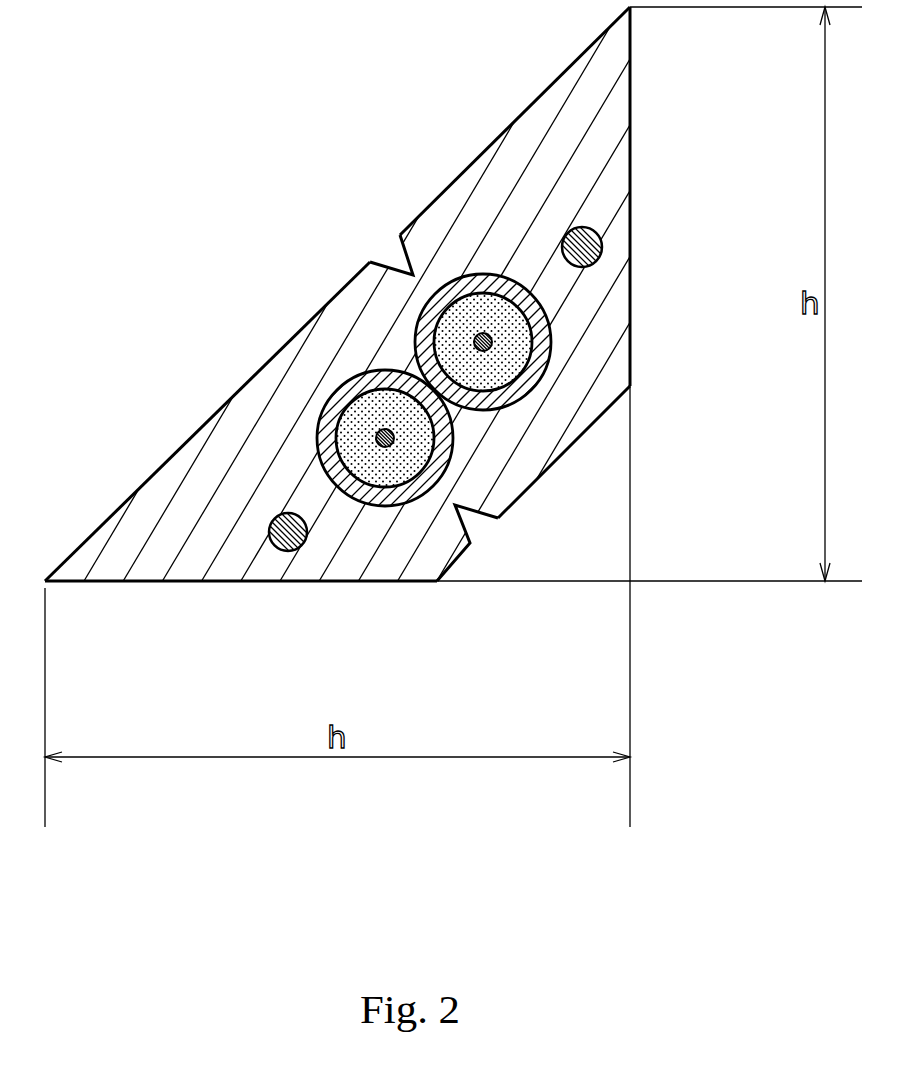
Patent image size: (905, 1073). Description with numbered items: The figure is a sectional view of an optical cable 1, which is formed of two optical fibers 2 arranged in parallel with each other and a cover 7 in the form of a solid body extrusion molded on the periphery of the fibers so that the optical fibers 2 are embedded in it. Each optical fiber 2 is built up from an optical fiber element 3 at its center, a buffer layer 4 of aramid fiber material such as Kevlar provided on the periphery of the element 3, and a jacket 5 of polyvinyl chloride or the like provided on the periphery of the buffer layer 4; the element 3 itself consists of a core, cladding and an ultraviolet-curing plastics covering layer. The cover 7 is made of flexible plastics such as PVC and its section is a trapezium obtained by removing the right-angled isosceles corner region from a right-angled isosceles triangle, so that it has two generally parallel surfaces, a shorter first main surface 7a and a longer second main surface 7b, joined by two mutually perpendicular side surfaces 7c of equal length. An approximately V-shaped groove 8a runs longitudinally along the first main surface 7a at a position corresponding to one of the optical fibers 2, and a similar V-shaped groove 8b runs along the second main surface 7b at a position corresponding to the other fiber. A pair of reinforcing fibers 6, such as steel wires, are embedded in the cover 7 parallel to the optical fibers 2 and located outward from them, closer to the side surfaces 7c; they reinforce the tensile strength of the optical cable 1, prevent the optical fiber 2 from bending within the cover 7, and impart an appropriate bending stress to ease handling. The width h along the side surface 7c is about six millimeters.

The optical cable 1 is at (475, 351).
The optical fiber 2 is at (552, 457).
The optical fiber element 3 is at (490, 338).
The buffer layer 4 is at (513, 348).
The jacket 5 is at (527, 383).
The reinforcing fiber 6 is at (598, 233).
The cover 7 is at (612, 110).
The first main surface 7a is at (530, 490).
The second main surface 7b is at (247, 382).
The side surface 7c is at (178, 583).
The groove 8a is at (462, 528).
The groove 8b is at (378, 256).